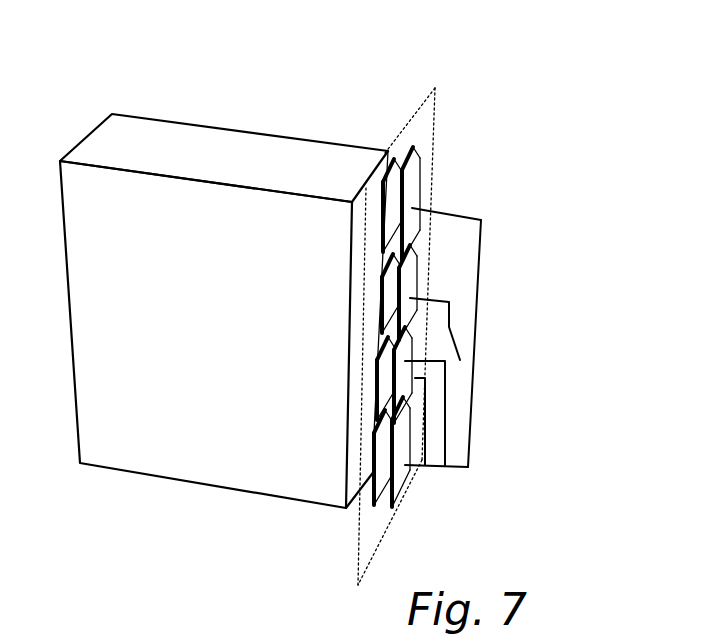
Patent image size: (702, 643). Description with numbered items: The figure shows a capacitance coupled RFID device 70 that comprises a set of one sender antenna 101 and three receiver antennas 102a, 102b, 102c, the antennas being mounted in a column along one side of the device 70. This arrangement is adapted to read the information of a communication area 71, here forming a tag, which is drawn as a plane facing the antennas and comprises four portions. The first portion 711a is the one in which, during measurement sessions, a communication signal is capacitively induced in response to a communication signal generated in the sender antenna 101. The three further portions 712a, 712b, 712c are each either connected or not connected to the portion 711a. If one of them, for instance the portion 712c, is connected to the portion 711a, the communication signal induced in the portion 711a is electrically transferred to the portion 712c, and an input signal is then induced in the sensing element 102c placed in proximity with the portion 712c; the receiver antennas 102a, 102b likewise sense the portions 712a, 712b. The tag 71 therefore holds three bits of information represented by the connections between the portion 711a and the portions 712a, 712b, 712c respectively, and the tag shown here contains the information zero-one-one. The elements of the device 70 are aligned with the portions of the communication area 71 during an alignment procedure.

The device 70 is at (386, 80).
The communication area 71 is at (473, 90).
The sender antenna 101 is at (396, 158).
The receiver antenna 102a is at (378, 281).
The receiver antenna 102b is at (376, 365).
The receiver antenna 102c is at (377, 447).
The portion 711a is at (403, 182).
The portion 712a is at (400, 280).
The portion 712b is at (403, 367).
The portion 712c is at (405, 478).